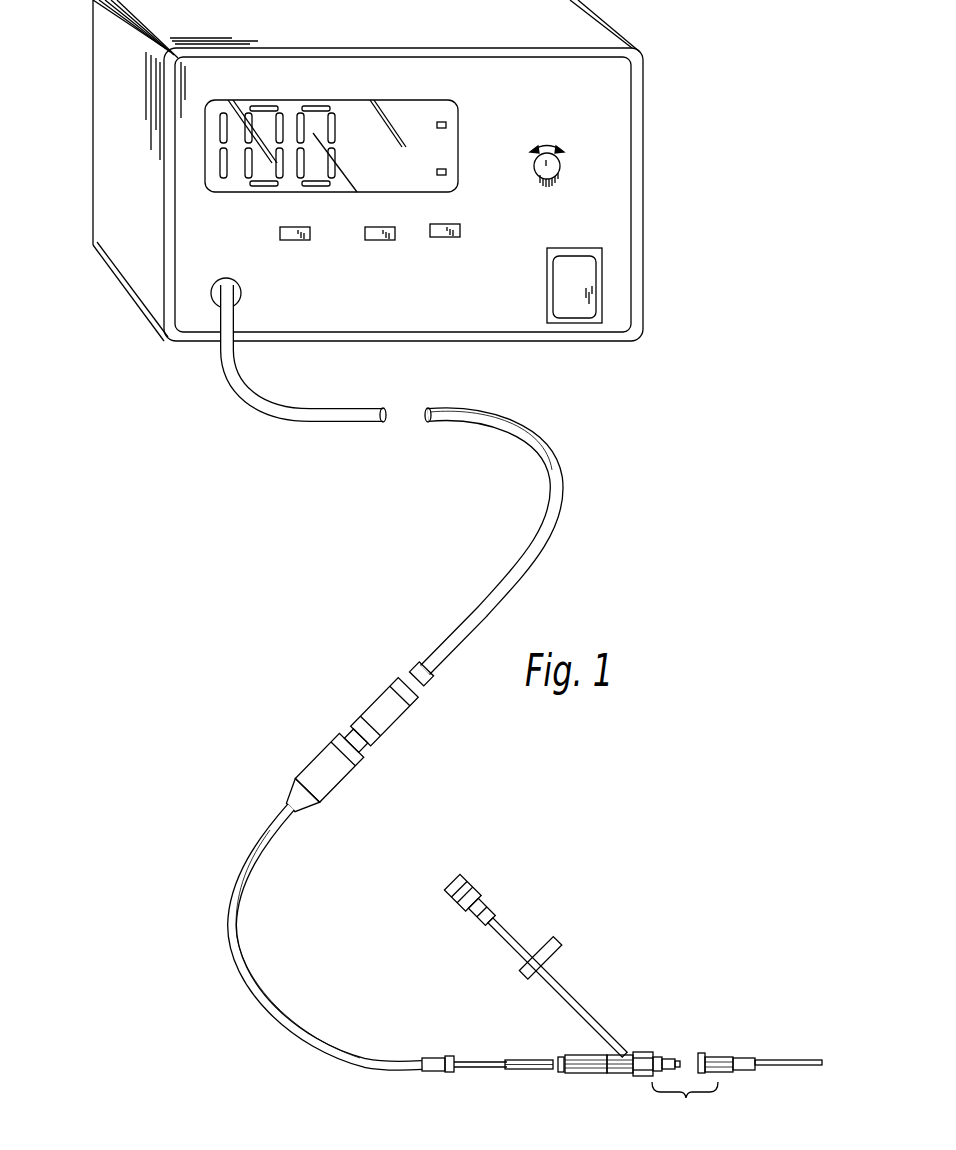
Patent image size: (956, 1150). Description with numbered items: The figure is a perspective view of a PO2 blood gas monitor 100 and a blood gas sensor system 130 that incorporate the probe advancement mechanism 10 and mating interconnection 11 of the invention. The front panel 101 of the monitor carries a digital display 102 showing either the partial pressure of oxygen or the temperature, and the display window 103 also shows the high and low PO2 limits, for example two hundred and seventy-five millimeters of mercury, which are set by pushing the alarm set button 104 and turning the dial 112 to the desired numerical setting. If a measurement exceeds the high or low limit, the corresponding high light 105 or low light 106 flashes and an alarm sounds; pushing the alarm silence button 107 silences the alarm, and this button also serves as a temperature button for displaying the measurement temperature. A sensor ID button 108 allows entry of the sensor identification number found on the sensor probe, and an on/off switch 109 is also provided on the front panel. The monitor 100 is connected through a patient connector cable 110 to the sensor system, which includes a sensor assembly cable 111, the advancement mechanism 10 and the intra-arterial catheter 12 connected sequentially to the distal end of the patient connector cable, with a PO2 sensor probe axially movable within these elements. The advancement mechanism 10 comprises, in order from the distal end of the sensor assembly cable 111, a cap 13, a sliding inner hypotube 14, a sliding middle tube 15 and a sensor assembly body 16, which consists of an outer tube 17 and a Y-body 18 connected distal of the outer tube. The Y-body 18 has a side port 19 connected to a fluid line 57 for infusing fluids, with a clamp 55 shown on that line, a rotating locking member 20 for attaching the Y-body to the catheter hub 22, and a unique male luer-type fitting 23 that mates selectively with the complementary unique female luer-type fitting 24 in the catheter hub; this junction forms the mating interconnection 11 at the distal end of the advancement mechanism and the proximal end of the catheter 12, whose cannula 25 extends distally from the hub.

The blood gas monitor 100 is at (650, 160).
The front panel 101 is at (617, 80).
The digital display 102 is at (279, 96).
The display window 103 is at (337, 98).
The alarm set button 104 is at (365, 236).
The high light 105 is at (442, 122).
The low light 106 is at (445, 170).
The alarm silence button 107 is at (462, 228).
The sensor ID button 108 is at (296, 242).
The on/off switch 109 is at (592, 283).
The patient connector cable 110 is at (555, 482).
The sensor assembly cable 111 is at (231, 947).
The dial 112 is at (558, 163).
The blood gas sensor system 130 is at (460, 854).
The clamp 55 is at (563, 940).
The fluid line 57 is at (510, 936).
The advancement mechanism 10 is at (536, 1081).
The mating interconnection 11 is at (685, 1105).
The intra-arterial catheter 12 is at (757, 1082).
The cap 13 is at (432, 1057).
The sliding inner hypotube 14 is at (483, 1062).
The sliding middle tube 15 is at (528, 1060).
The sensor assembly body 16 is at (588, 1048).
The outer tube 17 is at (583, 1074).
The Y-body 18 is at (623, 1074).
The side port 19 is at (622, 1050).
The rotating locking member 20 is at (643, 1052).
The catheter hub 22 is at (713, 1054).
The male luer-type fitting 23 is at (671, 1047).
The female luer-type fitting 24 is at (692, 1047).
The needle 25 is at (800, 1060).